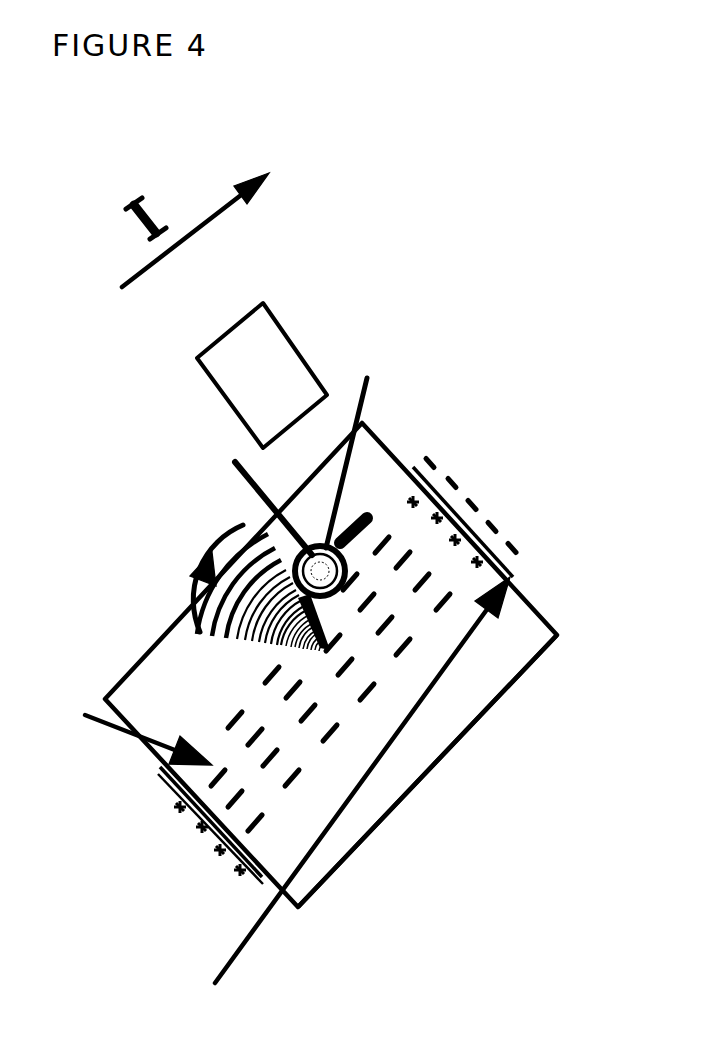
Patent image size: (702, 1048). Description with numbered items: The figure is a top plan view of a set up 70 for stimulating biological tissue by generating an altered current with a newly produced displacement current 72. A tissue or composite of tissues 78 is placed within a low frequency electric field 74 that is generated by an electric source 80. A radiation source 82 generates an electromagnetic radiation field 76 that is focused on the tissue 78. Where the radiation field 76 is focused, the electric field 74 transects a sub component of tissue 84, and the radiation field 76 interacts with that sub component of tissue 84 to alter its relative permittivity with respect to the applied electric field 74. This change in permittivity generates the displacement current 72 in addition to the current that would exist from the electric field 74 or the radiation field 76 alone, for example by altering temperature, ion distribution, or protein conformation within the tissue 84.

The set up 70 is at (460, 283).
The displacement current 72 is at (163, 205).
The low frequency electric field 74 is at (129, 728).
The electromagnetic radiation field 76 is at (252, 648).
The tissue or composite of tissues 78 is at (452, 744).
The electric source 80 is at (205, 875).
The radiation source 82 is at (197, 572).
The sub component of tissue 84 is at (230, 328).